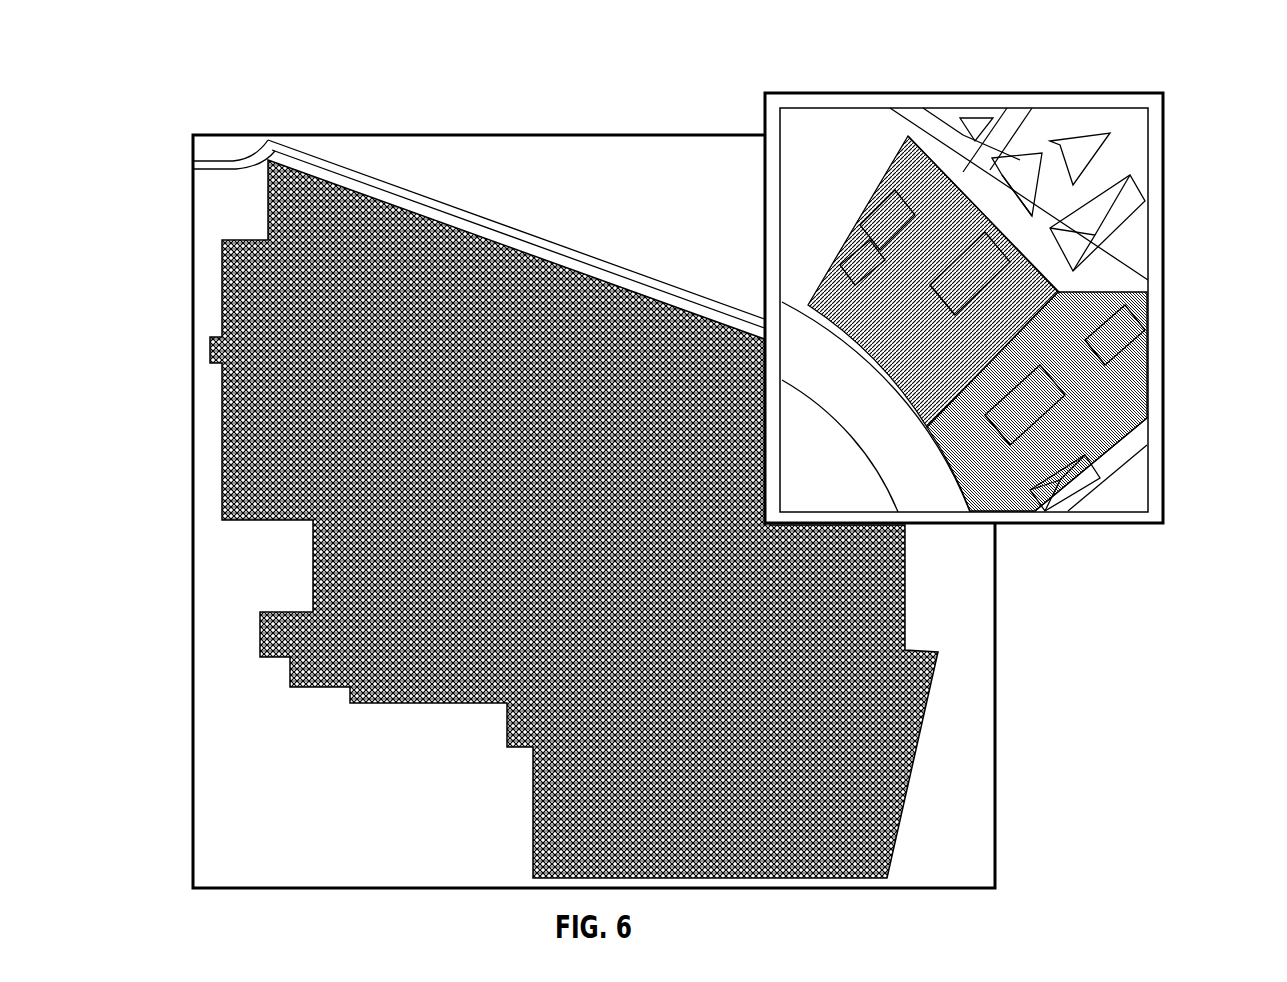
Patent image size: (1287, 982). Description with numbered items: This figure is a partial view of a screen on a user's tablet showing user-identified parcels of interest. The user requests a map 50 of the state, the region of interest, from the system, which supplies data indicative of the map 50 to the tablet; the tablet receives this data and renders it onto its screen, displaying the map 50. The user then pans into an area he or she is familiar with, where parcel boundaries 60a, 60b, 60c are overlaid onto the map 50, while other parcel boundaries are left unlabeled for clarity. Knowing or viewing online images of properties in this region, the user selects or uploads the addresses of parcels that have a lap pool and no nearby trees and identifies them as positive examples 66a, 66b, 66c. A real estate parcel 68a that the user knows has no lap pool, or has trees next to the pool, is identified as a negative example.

The map 50 is at (476, 194).
The parcel boundary 60a is at (1086, 360).
The parcel boundary 60b is at (952, 168).
The parcel boundary 60c is at (1108, 438).
The positive example 66a is at (889, 240).
The positive example 66b is at (1055, 316).
The positive example 66c is at (1128, 366).
The negative real estate parcel 68a is at (1050, 496).